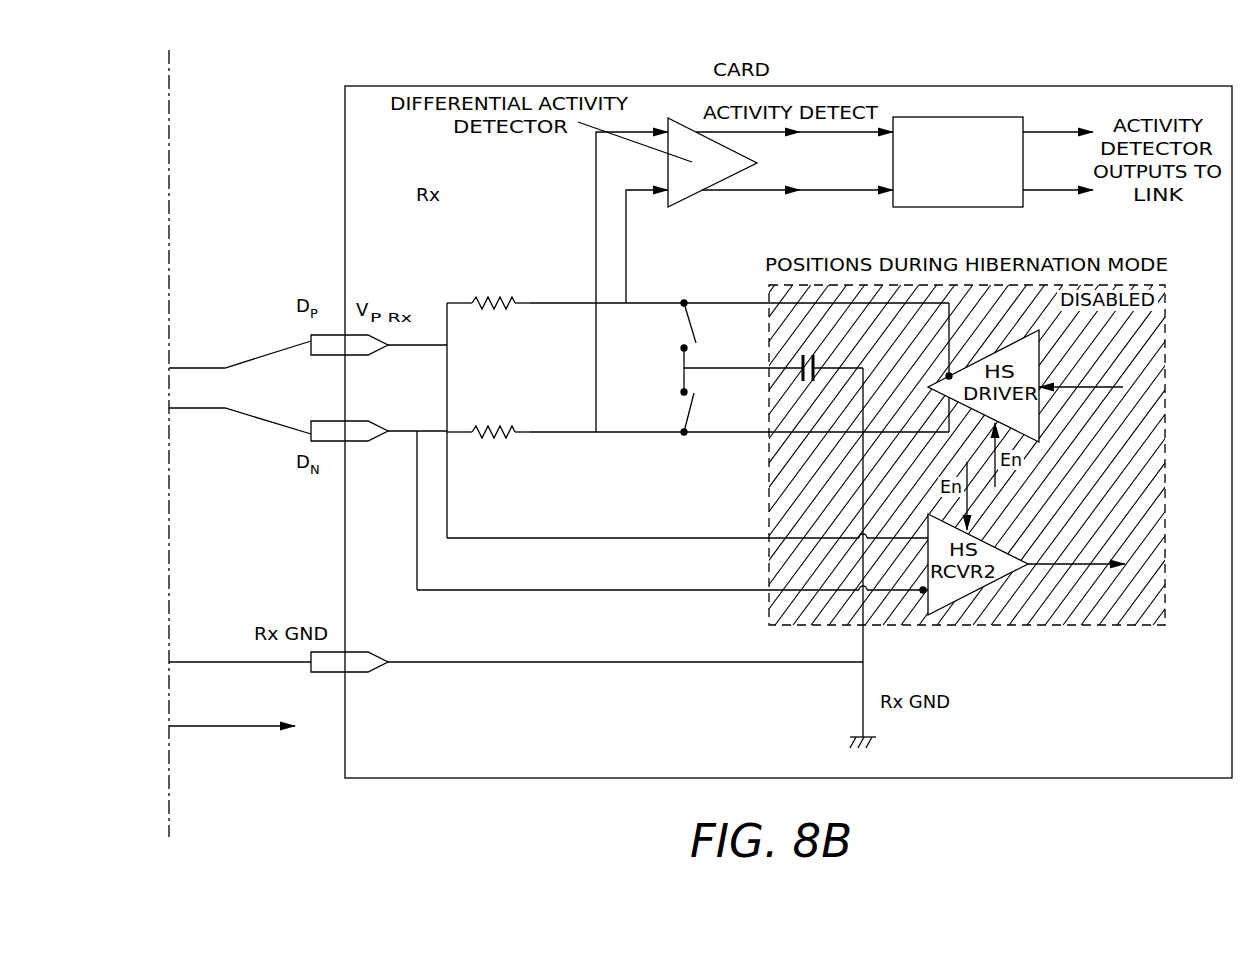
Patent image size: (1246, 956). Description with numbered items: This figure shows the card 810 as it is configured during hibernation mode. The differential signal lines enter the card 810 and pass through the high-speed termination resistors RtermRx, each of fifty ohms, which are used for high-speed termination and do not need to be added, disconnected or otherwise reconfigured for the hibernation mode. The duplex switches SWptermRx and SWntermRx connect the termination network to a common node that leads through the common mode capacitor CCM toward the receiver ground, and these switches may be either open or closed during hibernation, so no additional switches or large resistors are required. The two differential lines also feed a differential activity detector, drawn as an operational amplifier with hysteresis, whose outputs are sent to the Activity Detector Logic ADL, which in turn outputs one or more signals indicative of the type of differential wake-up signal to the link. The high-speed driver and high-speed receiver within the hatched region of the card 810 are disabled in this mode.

The card 810 is at (493, 778).
The Activity Detector Logic ADL is at (958, 162).
The receiver termination resistor RtermRx is at (513, 346).
The positive termination switch SWptermRx is at (700, 313).
The negative termination switch SWntermRx is at (700, 421).
The common mode capacitor CCM is at (773, 382).